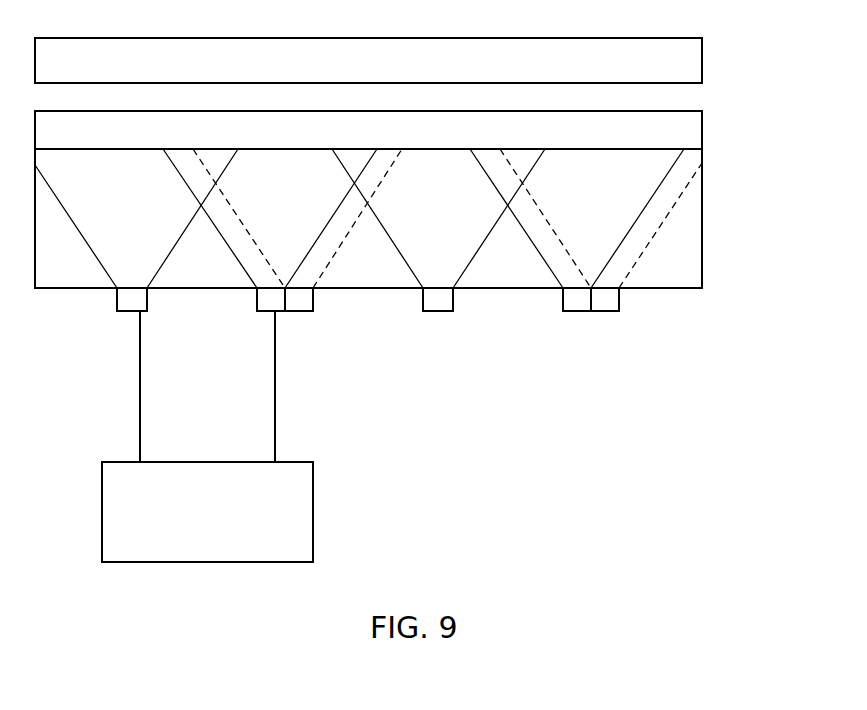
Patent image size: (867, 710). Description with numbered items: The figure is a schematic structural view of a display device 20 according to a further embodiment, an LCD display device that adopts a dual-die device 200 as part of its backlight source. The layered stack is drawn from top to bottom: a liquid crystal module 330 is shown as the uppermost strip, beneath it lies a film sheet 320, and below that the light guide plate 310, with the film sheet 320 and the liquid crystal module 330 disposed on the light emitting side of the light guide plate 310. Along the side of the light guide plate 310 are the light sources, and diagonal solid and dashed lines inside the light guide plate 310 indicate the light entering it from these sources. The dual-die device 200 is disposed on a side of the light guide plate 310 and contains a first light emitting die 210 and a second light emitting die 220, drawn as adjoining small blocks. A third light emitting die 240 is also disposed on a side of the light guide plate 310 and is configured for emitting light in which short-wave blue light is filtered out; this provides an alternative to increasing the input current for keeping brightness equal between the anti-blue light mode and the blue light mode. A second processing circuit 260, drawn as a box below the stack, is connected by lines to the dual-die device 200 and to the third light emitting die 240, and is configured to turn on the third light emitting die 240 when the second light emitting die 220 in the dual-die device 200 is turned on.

The liquid crystal module 330 is at (674, 55).
The film sheet 320 is at (674, 120).
The light guide plate 310 is at (674, 261).
The third light emitting die 240 is at (129, 300).
The second light emitting die 220 is at (268, 300).
The first light emitting die 210 is at (302, 300).
The dual-die device 200 is at (587, 370).
The display device 20 is at (410, 240).
The second processing circuit 260 is at (207, 436).